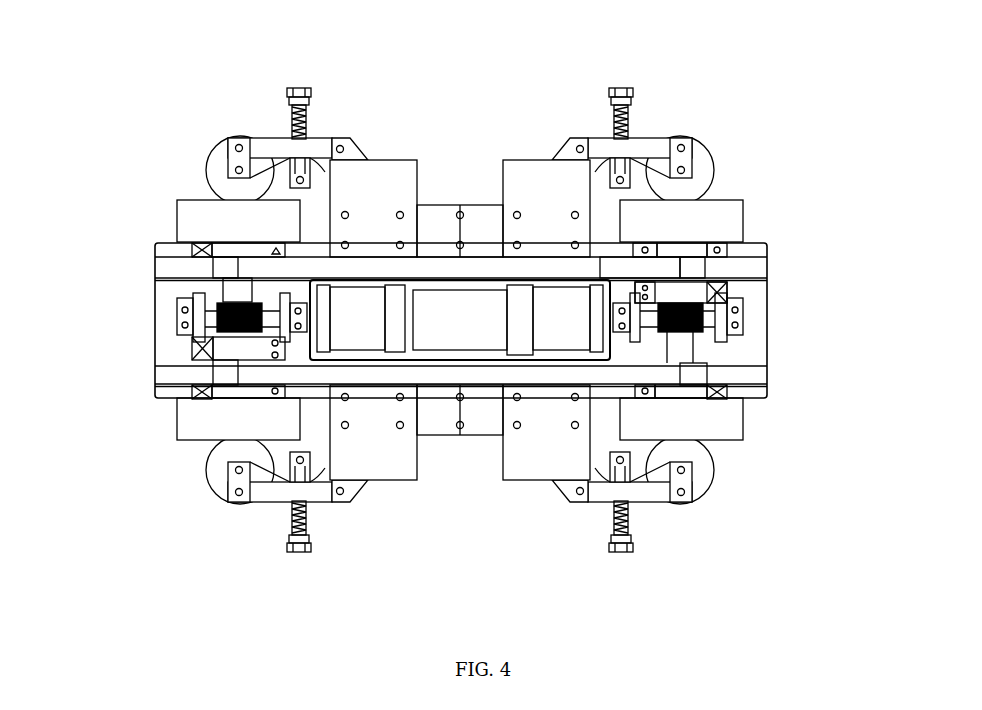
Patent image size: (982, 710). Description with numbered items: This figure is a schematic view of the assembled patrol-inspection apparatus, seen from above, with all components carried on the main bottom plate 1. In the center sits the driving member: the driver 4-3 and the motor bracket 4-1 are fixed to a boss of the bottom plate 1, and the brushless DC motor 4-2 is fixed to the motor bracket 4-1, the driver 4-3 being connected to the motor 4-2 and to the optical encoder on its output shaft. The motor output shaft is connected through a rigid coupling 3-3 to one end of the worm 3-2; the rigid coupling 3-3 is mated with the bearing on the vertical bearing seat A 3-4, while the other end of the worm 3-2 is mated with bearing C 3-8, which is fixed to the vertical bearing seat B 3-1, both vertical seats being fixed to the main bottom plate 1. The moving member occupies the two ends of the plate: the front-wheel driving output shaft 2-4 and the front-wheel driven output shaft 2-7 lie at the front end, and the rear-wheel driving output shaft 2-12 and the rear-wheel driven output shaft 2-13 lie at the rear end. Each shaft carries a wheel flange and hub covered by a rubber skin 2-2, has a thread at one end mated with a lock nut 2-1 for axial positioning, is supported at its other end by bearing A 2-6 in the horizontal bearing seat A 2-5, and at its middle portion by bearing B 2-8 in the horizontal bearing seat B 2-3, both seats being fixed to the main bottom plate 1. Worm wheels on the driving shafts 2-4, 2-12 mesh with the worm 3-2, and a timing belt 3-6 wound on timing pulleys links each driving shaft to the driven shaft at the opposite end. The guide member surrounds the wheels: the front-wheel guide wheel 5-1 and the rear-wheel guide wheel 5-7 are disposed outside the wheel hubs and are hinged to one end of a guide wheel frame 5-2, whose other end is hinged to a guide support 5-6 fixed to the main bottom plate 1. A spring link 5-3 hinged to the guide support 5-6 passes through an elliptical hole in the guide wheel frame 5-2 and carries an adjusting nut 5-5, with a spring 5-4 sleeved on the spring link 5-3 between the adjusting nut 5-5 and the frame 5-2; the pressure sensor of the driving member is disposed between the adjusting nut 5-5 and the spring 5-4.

The main bottom plate 1 is at (769, 405).
The lock nut 2-1 is at (226, 196).
The rubber skin 2-2 is at (188, 208).
The horizontal bearing seat B 2-3 is at (200, 250).
The front-wheel driving output shaft 2-4 is at (235, 292).
The horizontal bearing seat A 2-5 is at (199, 340).
The bearing A 2-6 is at (199, 352).
The front-wheel driven output shaft 2-7 is at (190, 347).
The bearing B 2-8 is at (222, 392).
The rear-wheel driving output shaft 2-12 is at (677, 350).
The rear-wheel driven output shaft 2-13 is at (655, 290).
The vertical bearing seat B 3-1 is at (712, 350).
The worm 3-2 is at (722, 340).
The rigid coupling 3-3 is at (745, 318).
The vertical bearing seat A 3-4 is at (718, 292).
The timing belt 3-6 is at (691, 268).
The bearing C 3-8 is at (627, 268).
The motor bracket 4-1 is at (608, 292).
The brushless DC motor 4-2 is at (523, 308).
The driver 4-3 is at (468, 317).
The front-wheel guide wheel 5-1 is at (215, 470).
The guide wheel frame 5-2 is at (272, 493).
The spring link 5-3 is at (300, 477).
The spring 5-4 is at (301, 547).
The adjusting nut 5-5 is at (306, 540).
The guide support 5-6 is at (388, 465).
The rear-wheel guide wheel 5-7 is at (692, 497).